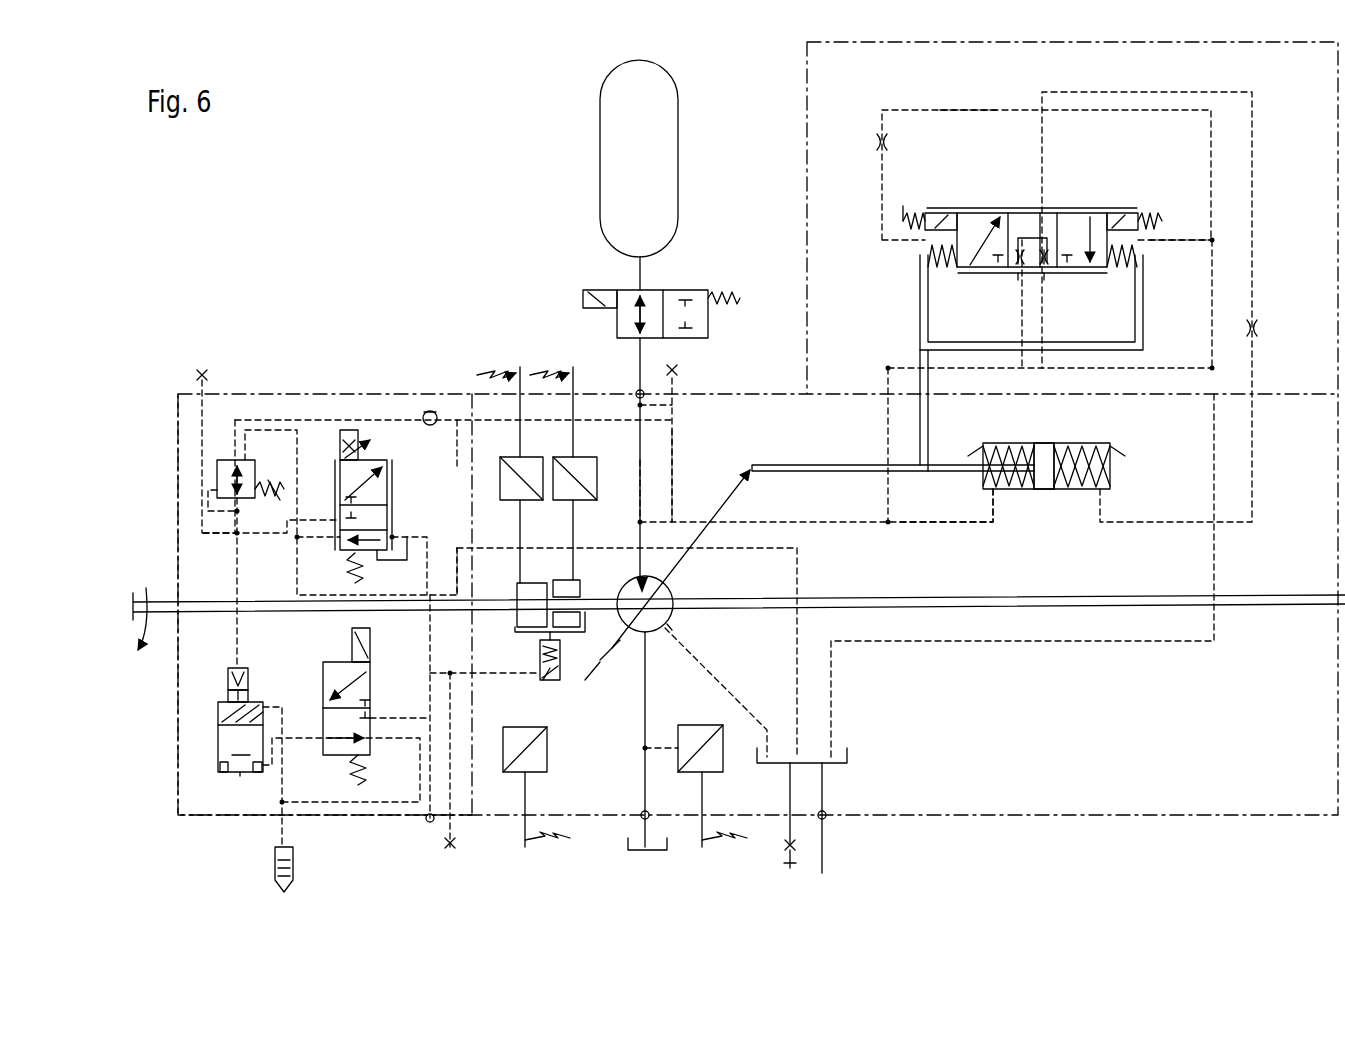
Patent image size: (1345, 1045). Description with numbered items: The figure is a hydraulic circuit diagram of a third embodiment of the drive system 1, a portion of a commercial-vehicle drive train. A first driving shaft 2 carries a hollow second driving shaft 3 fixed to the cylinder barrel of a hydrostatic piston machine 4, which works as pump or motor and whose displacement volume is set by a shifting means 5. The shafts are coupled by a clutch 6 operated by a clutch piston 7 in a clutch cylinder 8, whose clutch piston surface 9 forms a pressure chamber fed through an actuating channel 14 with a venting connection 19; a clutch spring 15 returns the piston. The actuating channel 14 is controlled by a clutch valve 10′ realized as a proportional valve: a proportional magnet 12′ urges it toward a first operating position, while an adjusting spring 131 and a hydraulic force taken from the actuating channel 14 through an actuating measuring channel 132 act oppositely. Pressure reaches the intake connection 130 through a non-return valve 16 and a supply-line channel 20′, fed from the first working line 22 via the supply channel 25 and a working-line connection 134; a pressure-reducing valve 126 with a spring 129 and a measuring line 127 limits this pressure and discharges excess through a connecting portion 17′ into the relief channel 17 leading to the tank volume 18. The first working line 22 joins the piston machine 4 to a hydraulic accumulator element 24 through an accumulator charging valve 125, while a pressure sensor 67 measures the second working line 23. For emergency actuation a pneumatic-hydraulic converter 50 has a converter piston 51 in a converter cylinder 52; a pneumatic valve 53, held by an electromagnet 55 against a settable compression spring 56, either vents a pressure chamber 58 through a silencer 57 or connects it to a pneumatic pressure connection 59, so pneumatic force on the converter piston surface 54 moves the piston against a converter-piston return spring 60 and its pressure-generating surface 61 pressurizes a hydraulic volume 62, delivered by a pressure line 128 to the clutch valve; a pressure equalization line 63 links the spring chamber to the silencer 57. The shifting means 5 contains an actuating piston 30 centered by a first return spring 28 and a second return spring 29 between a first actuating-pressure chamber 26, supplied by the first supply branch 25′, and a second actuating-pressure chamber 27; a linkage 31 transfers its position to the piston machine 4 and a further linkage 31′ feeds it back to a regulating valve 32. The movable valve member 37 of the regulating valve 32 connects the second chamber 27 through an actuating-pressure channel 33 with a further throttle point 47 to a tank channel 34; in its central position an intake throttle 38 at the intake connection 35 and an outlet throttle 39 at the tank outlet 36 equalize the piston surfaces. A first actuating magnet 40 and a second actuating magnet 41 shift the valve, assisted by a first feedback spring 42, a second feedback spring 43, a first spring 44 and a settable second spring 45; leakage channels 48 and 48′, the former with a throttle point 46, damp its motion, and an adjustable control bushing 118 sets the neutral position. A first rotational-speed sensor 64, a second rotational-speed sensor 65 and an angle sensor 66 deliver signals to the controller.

The drive system 1 is at (223, 273).
The first driving shaft 2 is at (166, 612).
The second driving shaft 3 is at (576, 645).
The hydrostatic piston machine 4 is at (667, 616).
The shifting means 5 is at (1009, 500).
The clutch 6 is at (576, 652).
The clutch piston 7 is at (540, 668).
The clutch cylinder 8 is at (574, 676).
The clutch piston surface 9 is at (543, 682).
The clutch valve 10′ is at (376, 443).
The proportional magnet 12′ is at (348, 430).
The actuating channel 14 is at (433, 648).
The clutch spring 15 is at (540, 652).
The non-return valve 16 is at (426, 410).
The relief channel 17 is at (457, 548).
The connecting portion 17′ is at (272, 420).
The tank volume 18 is at (848, 753).
The venting connection 19 is at (453, 852).
The supply-line channel 20′ is at (456, 418).
The first working line 22 is at (640, 448).
The second working line 23 is at (650, 697).
The hydraulic accumulator element 24 is at (613, 175).
The supply channel 25 is at (688, 522).
The first supply branch 25′ is at (945, 524).
The first actuating-pressure chamber 26 is at (1000, 445).
The second actuating-pressure chamber 27 is at (1062, 447).
The first return spring 28 is at (1035, 445).
The second return spring 29 is at (1092, 445).
The actuating piston 30 is at (1044, 490).
The linkage 31 is at (792, 462).
The further linkage 31′ is at (920, 360).
The regulating valve 32 is at (993, 128).
The actuating-pressure channel 33 is at (1256, 166).
The tank channel 34 is at (1213, 432).
The intake connection 35 is at (1018, 275).
The tank outlet 36 is at (1045, 275).
The valve piston 37 is at (1045, 210).
The intake throttle 38 is at (1018, 250).
The outlet throttle 39 is at (1048, 250).
The first actuating magnet 40 is at (930, 212).
The second actuating magnet 41 is at (1125, 212).
The first feedback spring 42 is at (1120, 270).
The second feedback spring 43 is at (944, 270).
The first spring 44 is at (905, 228).
The second spring 45 is at (1148, 208).
The throttle point 46 is at (876, 142).
The further throttle point 47 is at (1259, 328).
The leakage channel 48 is at (967, 112).
The leakage channel 48′ is at (1176, 243).
The pneumatic-hydraulic converter 50 is at (160, 757).
The converter piston 51 is at (240, 743).
The converter cylinder 52 is at (240, 776).
The pneumatic valve 53 is at (353, 786).
The converter piston surface 54 is at (222, 774).
The electromagnet 55 is at (352, 633).
The settable compression spring 56 is at (366, 770).
The silencer 57 is at (293, 880).
The pressure chamber 58 is at (258, 774).
The pneumatic pressure connection 59 is at (430, 823).
The converter-piston return spring 60 is at (218, 714).
The pressure-generating surface 61 is at (232, 674).
The hydraulic volume 62 is at (250, 674).
The pressure equalization line 63 is at (355, 804).
The first rotational-speed sensor 64 is at (523, 502).
The second rotational-speed sensor 65 is at (578, 502).
The angle sensor 66 is at (549, 766).
The pressure sensor 67 is at (724, 770).
The adjustable control bushing 118 is at (906, 198).
The accumulator charging valve 125 is at (700, 268).
The pressure-reducing valve 126 is at (226, 440).
The measuring line 127 is at (217, 490).
The pressure line 128 is at (236, 570).
The spring 129 is at (284, 500).
The intake connection 130 is at (340, 518).
The adjusting spring 131 is at (364, 566).
The actuating measuring channel 132 is at (410, 536).
The working-line connection 134 is at (640, 518).